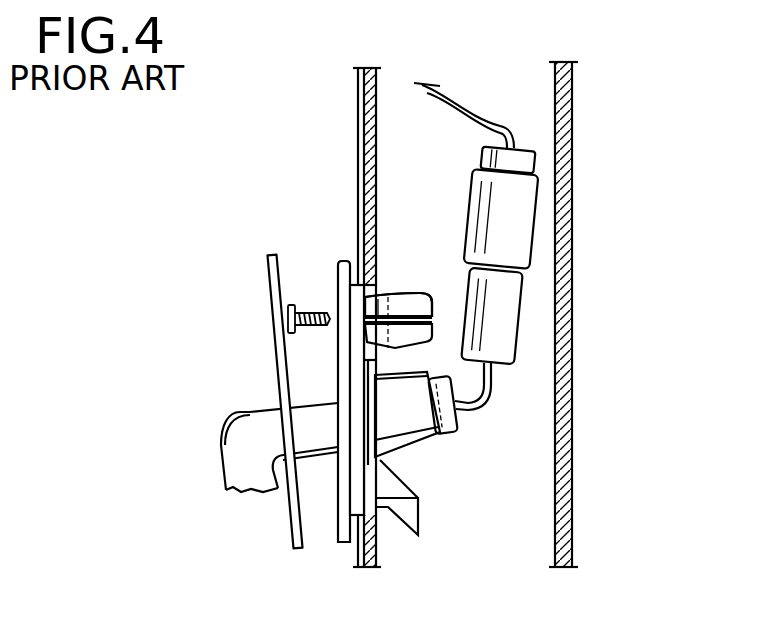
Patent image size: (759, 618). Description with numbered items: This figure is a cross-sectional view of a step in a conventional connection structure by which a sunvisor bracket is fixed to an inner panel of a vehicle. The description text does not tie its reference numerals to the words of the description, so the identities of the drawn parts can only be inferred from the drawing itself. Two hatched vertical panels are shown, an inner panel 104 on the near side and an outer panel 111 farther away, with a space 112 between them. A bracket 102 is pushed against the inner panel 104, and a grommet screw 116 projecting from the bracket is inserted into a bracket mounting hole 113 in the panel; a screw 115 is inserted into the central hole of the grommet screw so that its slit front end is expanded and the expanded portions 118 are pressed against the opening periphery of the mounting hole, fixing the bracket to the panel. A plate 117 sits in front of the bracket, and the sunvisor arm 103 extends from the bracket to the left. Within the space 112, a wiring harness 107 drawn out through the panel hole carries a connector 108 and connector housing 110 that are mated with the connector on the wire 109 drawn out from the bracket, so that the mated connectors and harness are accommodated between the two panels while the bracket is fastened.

The mounting plate 102 is at (340, 262).
The clamp hook 103 is at (228, 446).
The wall 104 is at (377, 555).
The cable 107 is at (478, 124).
The cap 108 is at (481, 150).
The cable 109 is at (470, 418).
The connector body 110 is at (506, 310).
The wall 111 is at (572, 468).
The gap 112 is at (545, 378).
The connector 113 is at (428, 297).
The screw 115 is at (313, 312).
The bracket 116 is at (420, 297).
The plate 117 is at (268, 300).
The slot 118 is at (433, 319).